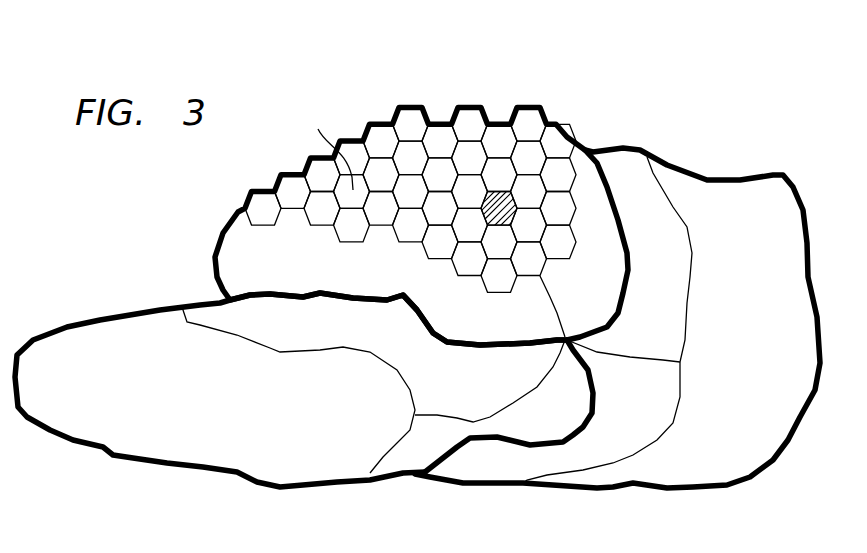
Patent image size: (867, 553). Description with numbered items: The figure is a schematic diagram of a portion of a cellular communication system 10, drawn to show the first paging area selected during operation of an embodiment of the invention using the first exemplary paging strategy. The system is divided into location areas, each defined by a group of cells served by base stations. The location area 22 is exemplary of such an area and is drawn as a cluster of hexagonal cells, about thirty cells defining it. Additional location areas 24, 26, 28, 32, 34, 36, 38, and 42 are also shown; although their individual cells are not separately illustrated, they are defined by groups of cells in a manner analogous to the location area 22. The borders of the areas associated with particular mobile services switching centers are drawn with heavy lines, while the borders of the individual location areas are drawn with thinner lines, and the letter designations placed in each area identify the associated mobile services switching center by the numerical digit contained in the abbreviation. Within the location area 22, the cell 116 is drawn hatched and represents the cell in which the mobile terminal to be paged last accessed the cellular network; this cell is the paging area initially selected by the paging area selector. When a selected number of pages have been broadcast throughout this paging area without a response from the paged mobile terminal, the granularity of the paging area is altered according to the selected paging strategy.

The cellular communication system 10 is at (688, 52).
The location area 22 is at (526, 143).
The cell 116 is at (505, 194).
The location area 24 is at (307, 281).
The location area 26 is at (597, 316).
The location area 28 is at (480, 406).
The location area 32 is at (247, 426).
The location area 34 is at (440, 446).
The location area 36 is at (647, 425).
The location area 38 is at (672, 286).
The location area 42 is at (757, 353).